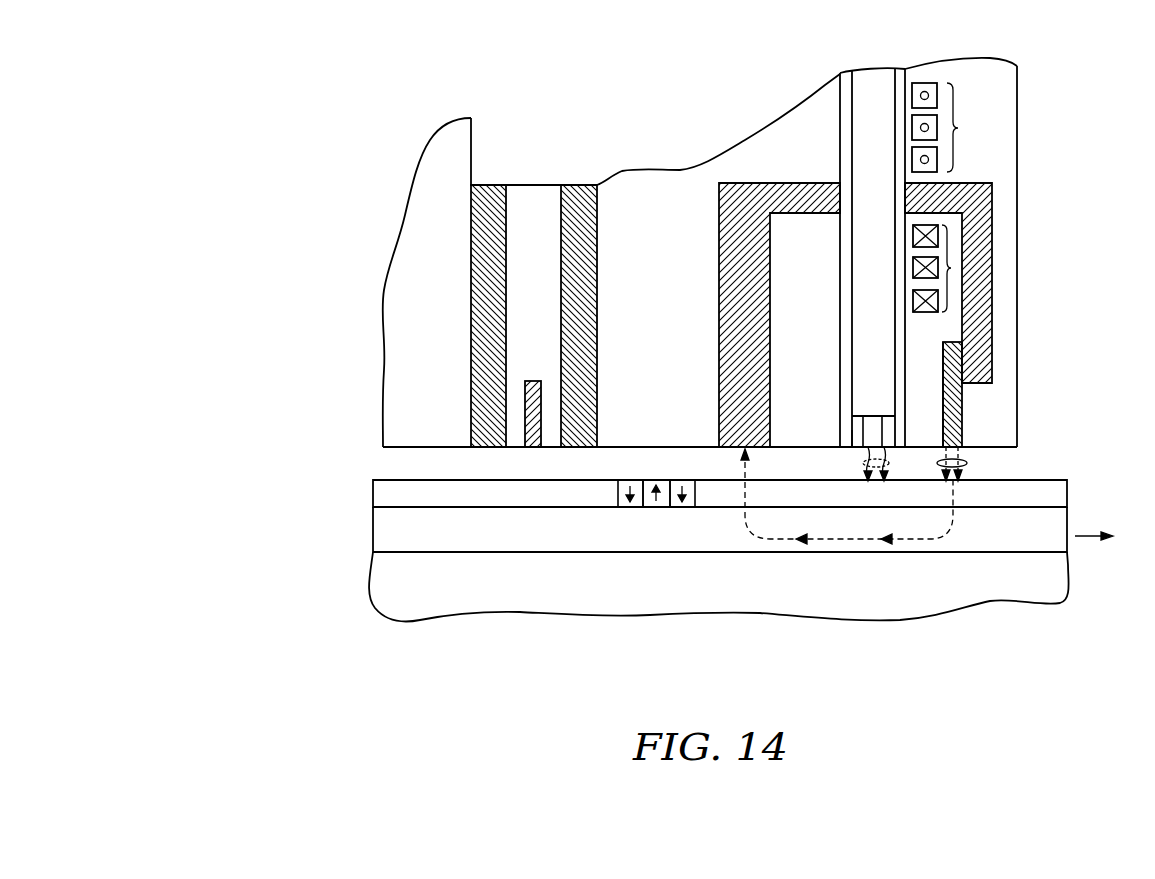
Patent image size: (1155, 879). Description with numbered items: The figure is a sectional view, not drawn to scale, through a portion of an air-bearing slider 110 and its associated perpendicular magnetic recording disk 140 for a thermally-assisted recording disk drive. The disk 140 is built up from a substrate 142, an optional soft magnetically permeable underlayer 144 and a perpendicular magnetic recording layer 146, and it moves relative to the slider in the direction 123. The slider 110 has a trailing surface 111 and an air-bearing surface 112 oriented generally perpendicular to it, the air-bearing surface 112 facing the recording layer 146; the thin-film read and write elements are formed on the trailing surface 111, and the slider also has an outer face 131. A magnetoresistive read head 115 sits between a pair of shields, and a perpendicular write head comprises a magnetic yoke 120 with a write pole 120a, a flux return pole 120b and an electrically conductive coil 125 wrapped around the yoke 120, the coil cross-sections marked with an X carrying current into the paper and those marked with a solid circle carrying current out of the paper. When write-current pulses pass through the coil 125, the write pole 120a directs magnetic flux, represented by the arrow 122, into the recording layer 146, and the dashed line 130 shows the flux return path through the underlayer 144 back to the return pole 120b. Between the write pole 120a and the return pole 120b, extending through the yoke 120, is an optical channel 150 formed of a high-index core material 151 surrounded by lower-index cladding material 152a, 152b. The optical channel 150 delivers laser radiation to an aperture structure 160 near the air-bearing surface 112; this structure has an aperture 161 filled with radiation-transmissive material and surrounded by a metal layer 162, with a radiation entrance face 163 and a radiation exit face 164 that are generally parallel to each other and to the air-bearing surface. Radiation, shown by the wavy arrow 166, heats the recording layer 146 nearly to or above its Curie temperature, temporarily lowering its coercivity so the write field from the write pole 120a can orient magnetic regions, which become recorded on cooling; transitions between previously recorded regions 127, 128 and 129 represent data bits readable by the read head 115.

The air-bearing slider 110 is at (714, 251).
The trailing surface 111 is at (472, 145).
The air-bearing surface 112 is at (646, 447).
The magnetoresistive read head 115 is at (530, 380).
The magnetic yoke 120 is at (869, 295).
The write pole 120a is at (963, 411).
The flux return pole 120b is at (728, 320).
The magnetic flux arrow 122 is at (967, 463).
The disk motion direction 123 is at (1085, 536).
The electrically conductive coil 125 is at (951, 268).
The previously recorded region 127 is at (655, 508).
The previously recorded region 128 is at (618, 507).
The previously recorded region 129 is at (684, 507).
The flux return path 130 is at (847, 540).
The outer face 131 is at (1018, 197).
The perpendicular magnetic recording disk 140 is at (712, 547).
The substrate 142 is at (975, 598).
The soft underlayer 144 is at (378, 531).
The perpendicular magnetic recording layer 146 is at (378, 497).
The optical channel 150 is at (926, 235).
The core material 151 is at (868, 288).
The cladding material 152a is at (848, 318).
The cladding material 152b is at (900, 333).
The aperture structure 160 is at (910, 434).
The aperture 161 is at (873, 416).
The metal layer 162 is at (851, 430).
The radiation entrance face 163 is at (858, 414).
The radiation exit face 164 is at (852, 447).
The radiation arrow 166 is at (890, 466).